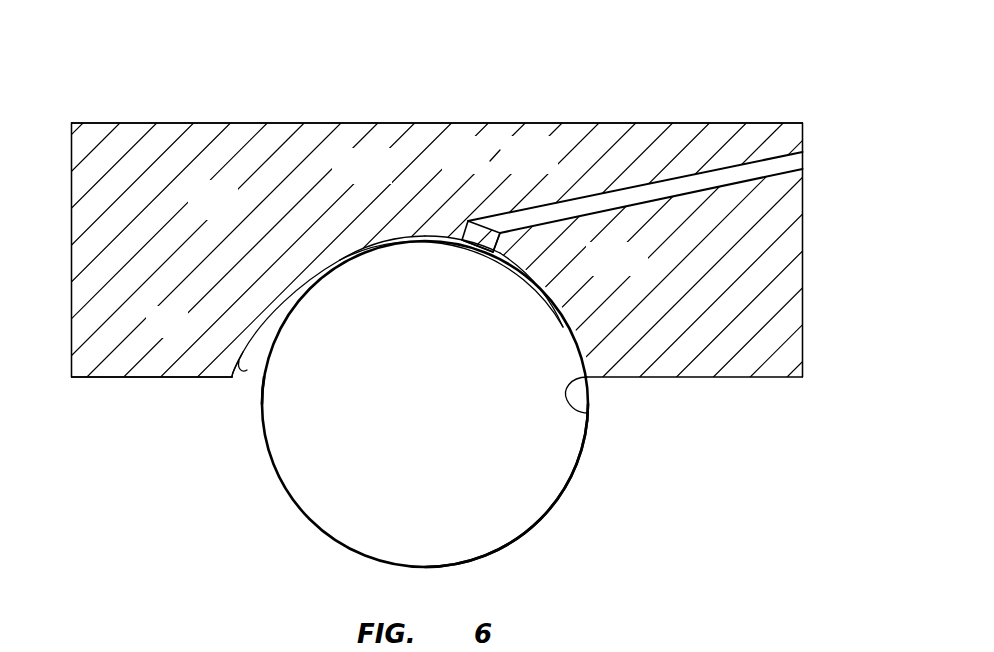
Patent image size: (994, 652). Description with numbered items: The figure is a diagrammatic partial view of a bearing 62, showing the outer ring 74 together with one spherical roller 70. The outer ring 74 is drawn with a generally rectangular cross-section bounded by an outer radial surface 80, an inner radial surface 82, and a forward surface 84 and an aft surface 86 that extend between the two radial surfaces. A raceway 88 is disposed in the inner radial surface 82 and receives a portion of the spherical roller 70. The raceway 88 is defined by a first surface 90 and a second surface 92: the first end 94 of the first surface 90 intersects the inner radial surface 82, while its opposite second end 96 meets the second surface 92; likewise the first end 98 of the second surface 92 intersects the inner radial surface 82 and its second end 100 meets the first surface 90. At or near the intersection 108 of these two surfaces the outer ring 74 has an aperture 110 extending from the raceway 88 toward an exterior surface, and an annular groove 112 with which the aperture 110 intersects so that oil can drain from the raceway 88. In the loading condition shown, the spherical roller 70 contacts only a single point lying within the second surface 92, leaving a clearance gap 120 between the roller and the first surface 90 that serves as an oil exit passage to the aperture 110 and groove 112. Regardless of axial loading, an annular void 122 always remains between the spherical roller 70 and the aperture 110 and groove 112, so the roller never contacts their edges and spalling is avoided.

The bearing 62 is at (572, 512).
The spherical roller 70 is at (408, 538).
The outer ring 74 is at (229, 213).
The outer radial surface 80 is at (287, 123).
The inner radial surface 82 is at (113, 378).
The forward surface 84 is at (72, 326).
The aft surface 86 is at (802, 325).
The raceway 88 is at (246, 404).
The first surface 90 is at (356, 250).
The second surface 92 is at (562, 330).
The first end of the first surface 94 is at (240, 365).
The second end of the first surface 96 is at (488, 228).
The first end of the second surface 98 is at (588, 412).
The second end of the second surface 100 is at (495, 238).
The intersection 108 is at (468, 245).
The aperture 110 is at (694, 176).
The annular groove 112 is at (500, 238).
The clearance gap 120 is at (247, 372).
The annular void 122 is at (430, 232).